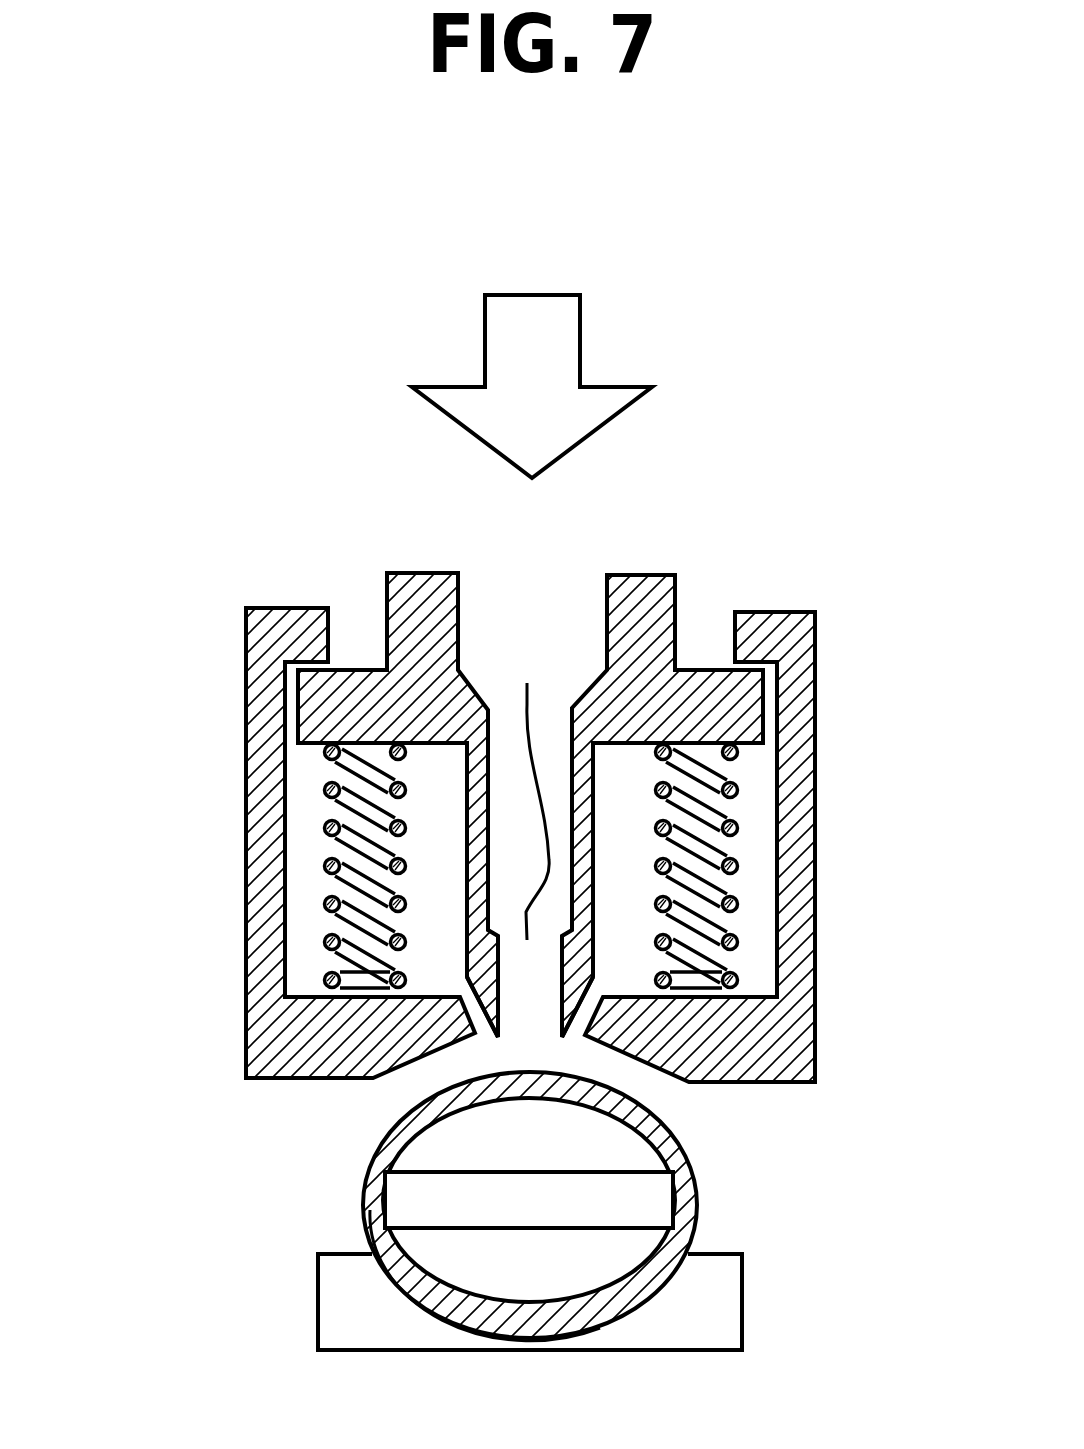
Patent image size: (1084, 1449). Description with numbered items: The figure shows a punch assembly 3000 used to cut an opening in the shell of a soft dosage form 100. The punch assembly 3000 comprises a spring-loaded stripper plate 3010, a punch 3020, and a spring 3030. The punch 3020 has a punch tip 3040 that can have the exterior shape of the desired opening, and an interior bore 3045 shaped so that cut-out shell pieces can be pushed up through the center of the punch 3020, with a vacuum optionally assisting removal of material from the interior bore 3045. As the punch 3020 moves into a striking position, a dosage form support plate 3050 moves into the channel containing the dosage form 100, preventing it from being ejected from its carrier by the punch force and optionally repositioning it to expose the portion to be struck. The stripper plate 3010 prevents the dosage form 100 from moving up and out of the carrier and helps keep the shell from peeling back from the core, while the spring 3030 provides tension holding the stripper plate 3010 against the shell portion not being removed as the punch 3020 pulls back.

The punch assembly 3000 is at (193, 1000).
The stripper plate 3010 is at (817, 677).
The punch 3020 is at (693, 617).
The spring 3030 is at (758, 885).
The punch tip 3040 is at (578, 1034).
The interior bore 3045 is at (529, 784).
The dosage form 100 is at (689, 1201).
The dosage form support plate 3050 is at (723, 1310).